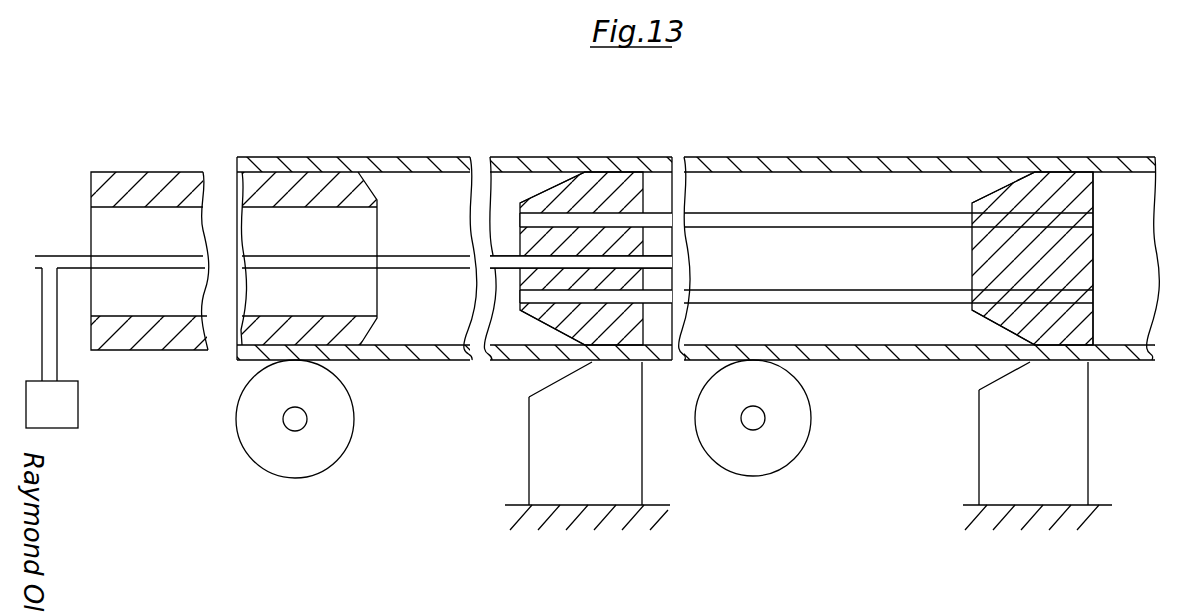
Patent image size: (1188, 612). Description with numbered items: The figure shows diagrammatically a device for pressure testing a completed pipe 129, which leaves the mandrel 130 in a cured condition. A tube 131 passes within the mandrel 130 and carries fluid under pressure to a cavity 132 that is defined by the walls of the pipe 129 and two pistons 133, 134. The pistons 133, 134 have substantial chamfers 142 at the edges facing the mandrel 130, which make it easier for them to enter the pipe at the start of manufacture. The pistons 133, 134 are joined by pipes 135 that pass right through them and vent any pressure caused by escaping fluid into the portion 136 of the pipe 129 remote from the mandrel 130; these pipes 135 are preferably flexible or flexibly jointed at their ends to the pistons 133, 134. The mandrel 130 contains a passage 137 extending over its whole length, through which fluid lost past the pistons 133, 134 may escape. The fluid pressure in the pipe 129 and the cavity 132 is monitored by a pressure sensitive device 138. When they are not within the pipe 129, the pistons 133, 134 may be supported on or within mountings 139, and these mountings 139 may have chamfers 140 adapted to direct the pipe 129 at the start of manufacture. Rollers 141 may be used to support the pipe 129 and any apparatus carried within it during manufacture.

The pipe 129 is at (503, 162).
The mandrel 130 is at (248, 190).
The tube 131 is at (402, 260).
The cavity 132 is at (707, 183).
The piston 133 is at (603, 177).
The piston 134 is at (1060, 182).
The pipes 135 is at (865, 293).
The portion of the pipe 136 is at (1123, 182).
The passage 137 is at (140, 308).
The pressure sensitive device 138 is at (57, 417).
The mountings 139 is at (632, 473).
The chamfers 140 is at (538, 385).
The rollers 141 is at (277, 458).
The chamfers 142 is at (547, 188).